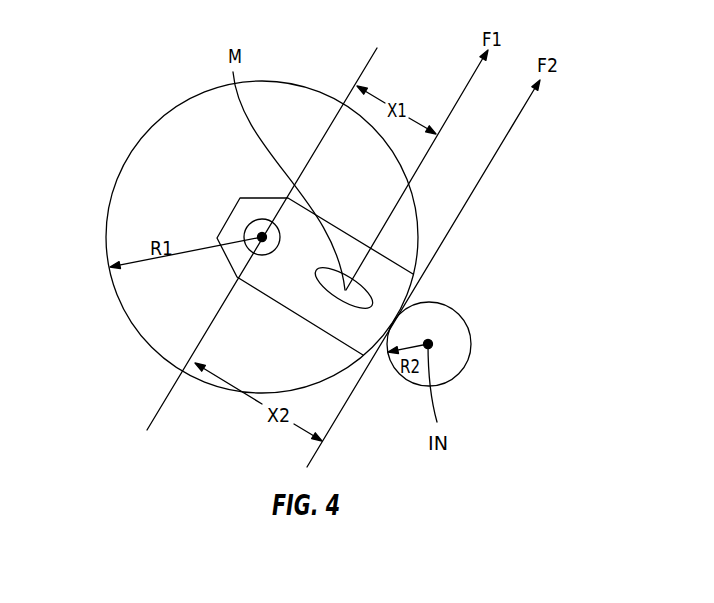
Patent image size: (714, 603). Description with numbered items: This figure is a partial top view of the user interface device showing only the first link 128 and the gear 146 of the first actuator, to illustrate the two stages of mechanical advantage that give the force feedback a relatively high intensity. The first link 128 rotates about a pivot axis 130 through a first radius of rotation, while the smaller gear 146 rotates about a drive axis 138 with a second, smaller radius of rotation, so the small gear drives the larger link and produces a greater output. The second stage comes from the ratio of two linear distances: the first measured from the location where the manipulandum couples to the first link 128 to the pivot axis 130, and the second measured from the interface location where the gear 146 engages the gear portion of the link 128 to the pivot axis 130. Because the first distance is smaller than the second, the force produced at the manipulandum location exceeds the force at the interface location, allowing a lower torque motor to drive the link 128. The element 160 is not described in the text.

The first link 128 is at (270, 280).
The pivot axis 130 is at (258, 236).
The drive axis 138 is at (428, 343).
The gear 146 is at (462, 348).
The opening 160 is at (362, 297).